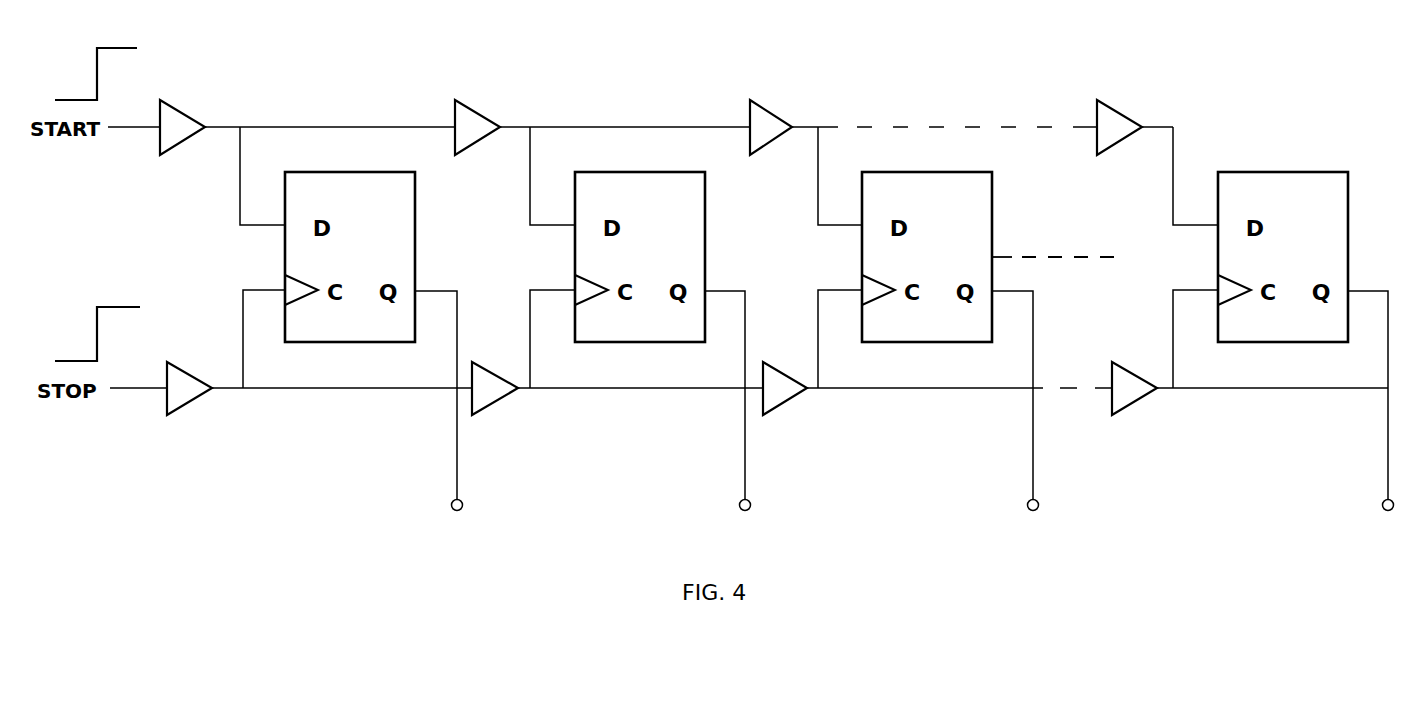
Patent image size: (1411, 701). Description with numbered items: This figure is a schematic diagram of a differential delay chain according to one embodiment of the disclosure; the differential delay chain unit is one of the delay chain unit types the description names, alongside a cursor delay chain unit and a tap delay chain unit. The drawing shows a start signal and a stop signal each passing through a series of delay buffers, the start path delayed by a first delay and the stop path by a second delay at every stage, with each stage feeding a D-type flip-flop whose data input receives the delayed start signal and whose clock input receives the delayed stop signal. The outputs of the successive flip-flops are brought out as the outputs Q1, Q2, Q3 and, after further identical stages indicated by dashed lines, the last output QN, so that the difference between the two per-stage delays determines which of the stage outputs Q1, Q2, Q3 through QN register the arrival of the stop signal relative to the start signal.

The first flip-flop output Q1 is at (443, 425).
The second flip-flop output Q2 is at (732, 425).
The third flip-flop output Q3 is at (1020, 425).
The Nth flip-flop output QN is at (1376, 425).